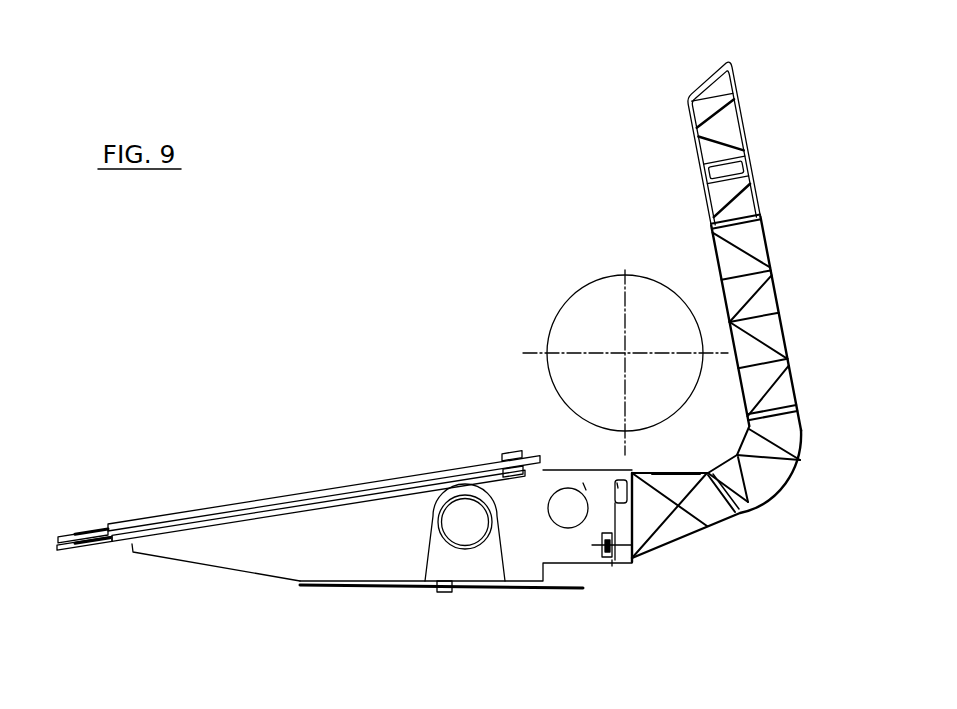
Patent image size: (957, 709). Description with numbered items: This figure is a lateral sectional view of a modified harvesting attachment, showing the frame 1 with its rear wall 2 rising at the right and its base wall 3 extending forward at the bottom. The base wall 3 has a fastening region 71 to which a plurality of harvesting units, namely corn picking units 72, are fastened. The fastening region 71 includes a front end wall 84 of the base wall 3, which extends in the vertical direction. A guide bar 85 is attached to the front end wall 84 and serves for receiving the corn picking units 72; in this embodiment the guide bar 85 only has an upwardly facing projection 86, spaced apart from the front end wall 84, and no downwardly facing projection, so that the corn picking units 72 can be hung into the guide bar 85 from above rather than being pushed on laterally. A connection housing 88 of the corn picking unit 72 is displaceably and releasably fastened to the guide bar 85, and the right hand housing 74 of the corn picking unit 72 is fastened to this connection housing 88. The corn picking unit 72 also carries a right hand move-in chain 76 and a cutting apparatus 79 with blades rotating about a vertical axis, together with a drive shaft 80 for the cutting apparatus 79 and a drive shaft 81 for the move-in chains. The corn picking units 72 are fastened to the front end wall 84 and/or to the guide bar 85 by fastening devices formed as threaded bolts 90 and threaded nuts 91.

The frame 1 is at (584, 188).
The rear wall 2 is at (804, 226).
The base wall 3 is at (734, 572).
The fastening region 71 is at (620, 625).
The corn picking unit 72 is at (241, 440).
The right hand housing 74 is at (256, 558).
The right hand move-in chain 76 is at (306, 496).
The cutting apparatus 79 is at (318, 588).
The drive shaft 80 is at (457, 523).
The drive shaft 81 is at (567, 508).
The front end wall 84 is at (665, 476).
The guide bar 85 is at (583, 483).
The upwardly facing projection 86 is at (617, 483).
The connection housing 88 is at (590, 477).
The threaded bolt 90 is at (622, 548).
The threaded nut 91 is at (612, 566).